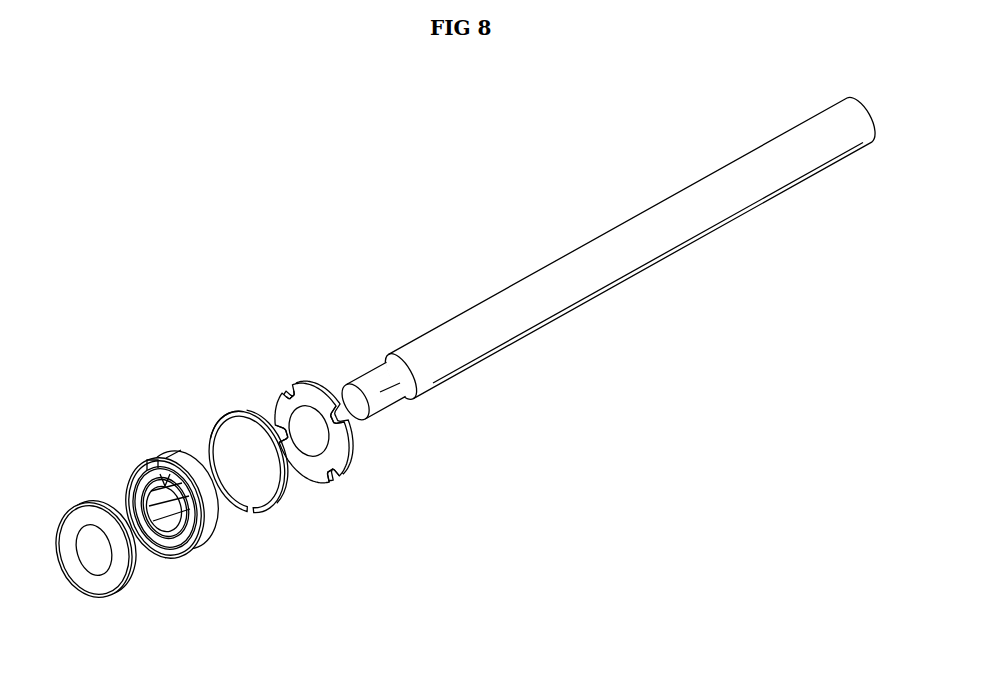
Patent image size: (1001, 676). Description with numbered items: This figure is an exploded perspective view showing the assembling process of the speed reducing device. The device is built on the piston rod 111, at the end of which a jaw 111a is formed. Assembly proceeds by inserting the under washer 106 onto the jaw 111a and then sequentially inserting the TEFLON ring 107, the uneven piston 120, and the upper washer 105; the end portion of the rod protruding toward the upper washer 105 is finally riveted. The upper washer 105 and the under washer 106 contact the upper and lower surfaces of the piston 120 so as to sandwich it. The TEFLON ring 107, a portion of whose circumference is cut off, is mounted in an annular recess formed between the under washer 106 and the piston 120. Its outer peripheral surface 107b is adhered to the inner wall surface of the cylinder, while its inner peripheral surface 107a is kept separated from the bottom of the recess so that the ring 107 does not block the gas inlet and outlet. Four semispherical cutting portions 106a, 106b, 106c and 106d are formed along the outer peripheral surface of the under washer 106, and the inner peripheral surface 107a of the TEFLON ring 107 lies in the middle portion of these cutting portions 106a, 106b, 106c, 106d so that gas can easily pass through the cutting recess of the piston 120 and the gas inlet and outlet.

The upper washer 105 is at (72, 505).
The under washer 106 is at (356, 453).
The semispherical cutting portion 106a is at (333, 473).
The semispherical cutting portion 106b is at (338, 410).
The semispherical cutting portion 106c is at (291, 392).
The semispherical cutting portion 106d is at (289, 445).
The TEFLON ring 107 is at (250, 518).
The inner peripheral surface of the TEFLON ring 107a is at (217, 426).
The outer peripheral surface of the TEFLON ring 107b is at (246, 411).
The piston rod 111 is at (613, 229).
The jaw 111a is at (414, 400).
The uneven piston 120 is at (150, 461).